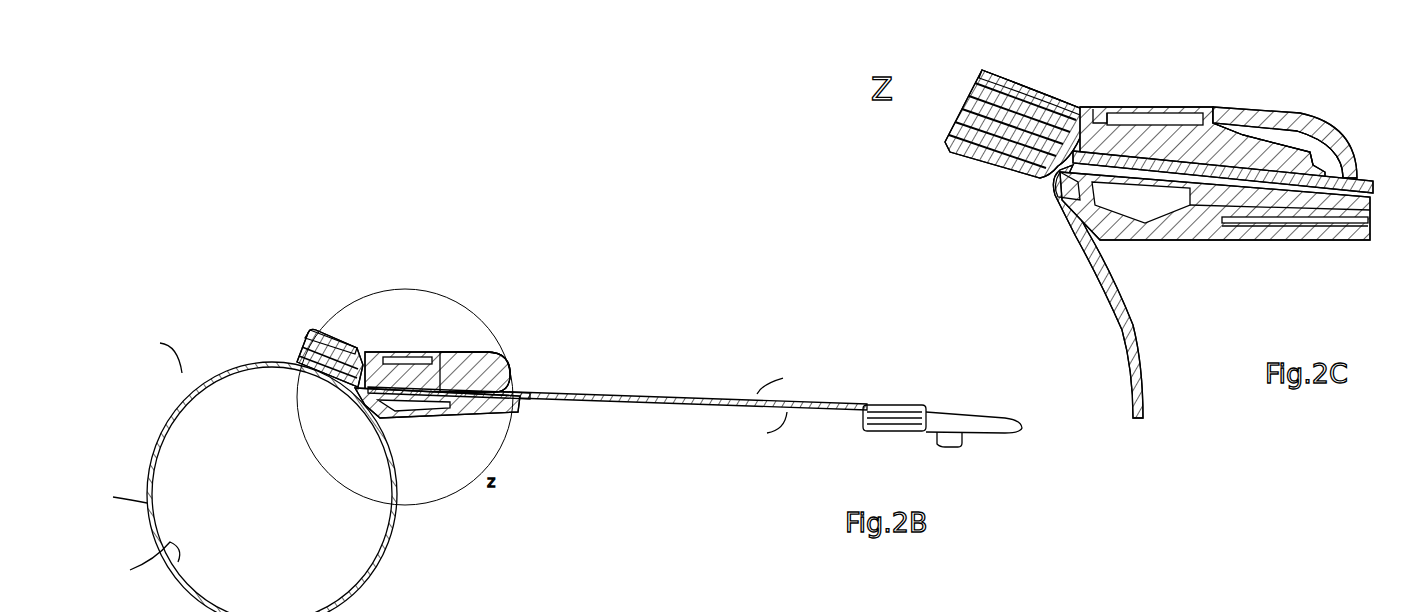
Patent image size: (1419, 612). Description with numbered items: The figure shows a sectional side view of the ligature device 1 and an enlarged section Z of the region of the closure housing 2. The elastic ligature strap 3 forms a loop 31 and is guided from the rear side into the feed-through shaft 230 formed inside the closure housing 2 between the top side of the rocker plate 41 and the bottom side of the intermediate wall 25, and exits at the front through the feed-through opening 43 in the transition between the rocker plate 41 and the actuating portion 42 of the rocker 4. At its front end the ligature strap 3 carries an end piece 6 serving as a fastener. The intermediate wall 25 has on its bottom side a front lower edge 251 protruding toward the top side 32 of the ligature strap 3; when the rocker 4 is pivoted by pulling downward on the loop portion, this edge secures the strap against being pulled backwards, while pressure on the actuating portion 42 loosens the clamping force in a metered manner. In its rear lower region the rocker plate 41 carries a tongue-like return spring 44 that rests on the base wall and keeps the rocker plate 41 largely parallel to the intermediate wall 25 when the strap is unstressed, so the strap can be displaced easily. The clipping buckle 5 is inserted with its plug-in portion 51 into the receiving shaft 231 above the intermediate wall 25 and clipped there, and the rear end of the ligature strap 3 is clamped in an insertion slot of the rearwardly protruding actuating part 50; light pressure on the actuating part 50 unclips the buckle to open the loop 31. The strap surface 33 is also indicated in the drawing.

In FIG. 2B, the ligature device 1 is at (652, 258).
In FIG. 2B, the closure housing 2 is at (400, 340).
In FIG. 2C, the closure housing 2 is at (1200, 90).
In FIG. 2B, the ligature strap 3 is at (373, 558).
In FIG. 2C, the ligature strap 3 is at (947, 150).
In FIG. 2B, the rocker 4 is at (483, 345).
In FIG. 2C, the rocker 4 is at (1280, 100).
In FIG. 2B, the clipping buckle 5 is at (340, 335).
In FIG. 2C, the clipping buckle 5 is at (920, 123).
In FIG. 2B, the end piece 6 is at (967, 405).
In FIG. 2B, the loop 31 is at (150, 346).
In FIG. 2B, the top side of the ligature strap 32 is at (458, 471).
In FIG. 2B, the strap inner surface 33 is at (433, 461).
In FIG. 2B, the rocker plate 41 is at (457, 397).
In FIG. 2C, the rocker plate 41 is at (1280, 205).
In FIG. 2B, the actuating portion 42 is at (500, 340).
In FIG. 2C, the feed-through opening 43 is at (1373, 197).
In FIG. 2C, the return spring 44 is at (1137, 223).
In FIG. 2C, the actuating part 50 is at (1137, 140).
In FIG. 2B, the plug-in portion 51 is at (327, 330).
In FIG. 2C, the plug-in portion 51 is at (983, 70).
In FIG. 2C, the intermediate wall 25 is at (1263, 153).
In FIG. 2C, the front lower edge 251 is at (1307, 157).
In FIG. 2C, the feed-through shaft 230 is at (1077, 195).
In FIG. 2C, the receiving shaft 231 is at (1167, 123).